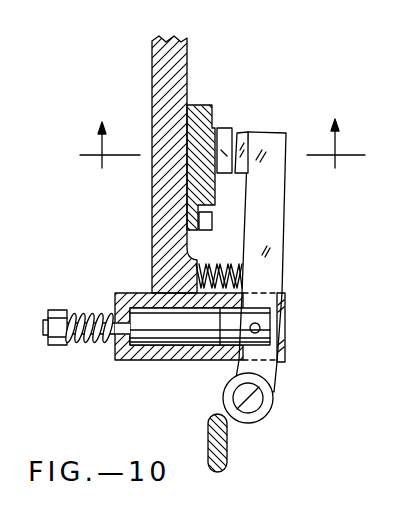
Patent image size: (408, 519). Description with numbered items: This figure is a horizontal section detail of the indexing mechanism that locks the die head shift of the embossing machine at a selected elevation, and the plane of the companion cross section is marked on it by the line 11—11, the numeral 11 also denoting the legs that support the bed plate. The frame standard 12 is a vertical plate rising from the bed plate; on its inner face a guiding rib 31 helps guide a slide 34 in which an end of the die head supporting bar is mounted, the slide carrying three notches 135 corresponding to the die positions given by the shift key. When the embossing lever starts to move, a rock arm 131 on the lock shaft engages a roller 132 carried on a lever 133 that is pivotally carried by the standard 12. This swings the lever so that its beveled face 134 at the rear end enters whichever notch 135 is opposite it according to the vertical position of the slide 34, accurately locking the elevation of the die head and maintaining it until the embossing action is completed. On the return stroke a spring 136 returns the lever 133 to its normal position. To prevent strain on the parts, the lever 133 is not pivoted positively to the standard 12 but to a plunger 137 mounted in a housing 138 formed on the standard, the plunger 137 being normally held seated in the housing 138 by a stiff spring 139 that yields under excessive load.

The legs 11 is at (222, 132).
The frame standard 12 is at (188, 70).
The guiding rib 31 is at (212, 123).
The slide 34 is at (195, 183).
The rock arm 131 is at (228, 450).
The roller 132 is at (275, 401).
The lever 133 is at (284, 220).
The beveled face 134 is at (243, 133).
The notches 135 is at (249, 128).
The spring 136 is at (216, 268).
The plunger 137 is at (192, 330).
The housing 138 is at (132, 355).
The stiff spring 139 is at (110, 308).